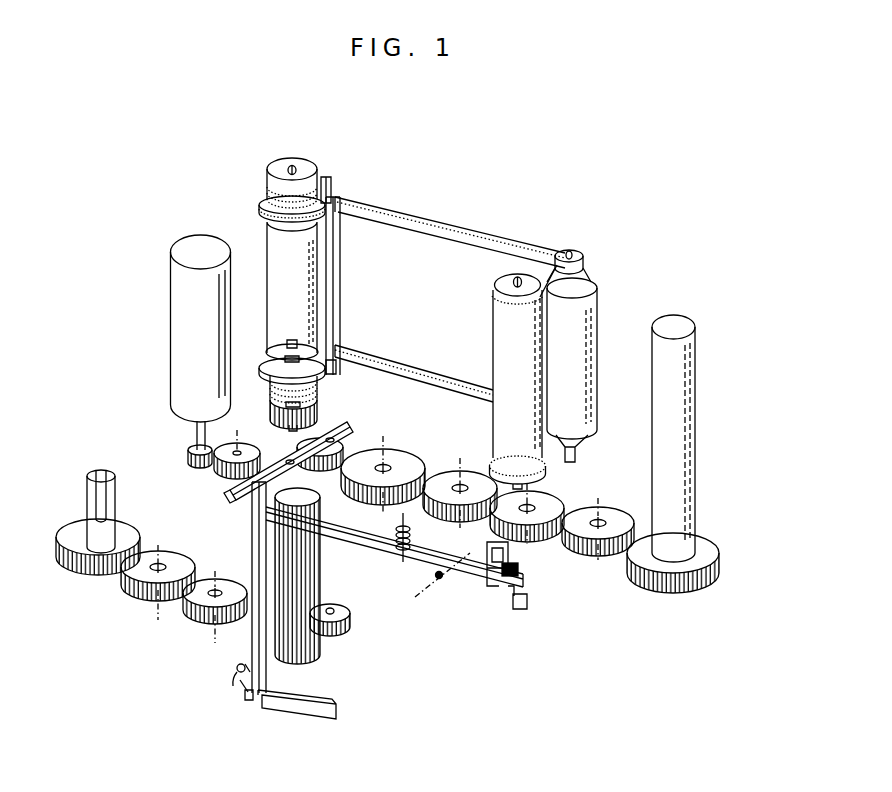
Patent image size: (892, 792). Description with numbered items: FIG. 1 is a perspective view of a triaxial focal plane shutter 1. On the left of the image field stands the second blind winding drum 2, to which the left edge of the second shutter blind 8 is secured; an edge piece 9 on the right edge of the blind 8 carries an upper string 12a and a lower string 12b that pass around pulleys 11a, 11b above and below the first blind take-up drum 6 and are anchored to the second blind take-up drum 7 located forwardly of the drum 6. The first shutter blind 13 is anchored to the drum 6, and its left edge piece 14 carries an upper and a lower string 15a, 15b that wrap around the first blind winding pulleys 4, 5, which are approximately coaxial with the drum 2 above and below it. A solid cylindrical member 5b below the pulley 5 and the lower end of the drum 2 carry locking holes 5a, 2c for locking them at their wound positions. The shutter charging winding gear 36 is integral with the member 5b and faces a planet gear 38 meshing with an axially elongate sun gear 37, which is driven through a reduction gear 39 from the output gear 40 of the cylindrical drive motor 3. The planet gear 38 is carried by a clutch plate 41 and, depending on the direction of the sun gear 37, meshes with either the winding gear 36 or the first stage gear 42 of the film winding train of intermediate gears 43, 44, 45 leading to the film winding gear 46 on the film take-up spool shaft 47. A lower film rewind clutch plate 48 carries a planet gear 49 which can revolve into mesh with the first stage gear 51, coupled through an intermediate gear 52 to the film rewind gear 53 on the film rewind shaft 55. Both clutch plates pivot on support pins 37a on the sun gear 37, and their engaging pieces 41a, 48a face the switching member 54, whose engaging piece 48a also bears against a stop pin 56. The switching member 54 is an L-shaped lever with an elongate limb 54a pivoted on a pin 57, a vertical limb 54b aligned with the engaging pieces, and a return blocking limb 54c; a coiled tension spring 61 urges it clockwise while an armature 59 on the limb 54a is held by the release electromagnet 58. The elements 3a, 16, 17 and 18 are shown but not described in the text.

The triaxial focal plane shutter 1 is at (505, 208).
The second blind winding drum 2 is at (280, 349).
The locking hole 2c is at (294, 355).
The drive motor 3 is at (171, 380).
The shaft of cylinder 3 3a is at (197, 433).
The first blind winding pulley 4 is at (281, 169).
The first blind winding pulley 5 is at (272, 385).
The locking hole 5a is at (272, 410).
The solid cylindrical member 5b is at (312, 400).
The first blind take-up drum 6 is at (589, 396).
The second blind take-up drum 7 is at (493, 425).
The second shutter blind 8 is at (268, 264).
The edge piece 9 is at (334, 243).
The pulley 11a is at (578, 262).
The pulley 11b is at (580, 456).
The upper string 12a is at (532, 250).
The lower string 12b is at (416, 383).
The first shutter blind 13 is at (424, 228).
The edge piece 14 is at (341, 282).
The upper string 15a is at (326, 177).
The lower string 15b is at (336, 373).
The ring 16 is at (264, 202).
The flange 17 is at (268, 365).
The pin 18 is at (291, 166).
The shutter charging winding gear 36 is at (284, 423).
The sun gear 37 is at (318, 578).
The support pin 37a is at (315, 499).
The planet gear 38 is at (345, 445).
The reduction gear 39 is at (224, 469).
The output gear 40 is at (188, 456).
The clutch plate 41 is at (318, 470).
The engaging piece 41a is at (238, 500).
The first stage gear 42 is at (412, 462).
The intermediate gear 43 is at (490, 554).
The intermediate gear 44 is at (536, 544).
The intermediate gear 45 is at (598, 556).
The film winding gear 46 is at (697, 581).
The film take-up spool shaft 47 is at (695, 453).
The film rewind clutch plate 48 is at (237, 669).
The engaging piece 48a is at (250, 699).
The planet gear 49 is at (352, 621).
The first stage gear 51 is at (201, 626).
The intermediate gear 52 is at (150, 598).
The film rewind gear 53 is at (99, 576).
The switching member 54 is at (470, 588).
The elongate limb 54a is at (392, 560).
The vertical limb 54b is at (252, 550).
The return blocking limb 54c is at (320, 716).
The film rewind shaft 55 is at (118, 508).
The stop pin 56 is at (240, 687).
The pin 57 is at (436, 584).
The release electromagnet 58 is at (519, 572).
The armature 59 is at (513, 609).
The coiled tension spring 61 is at (411, 541).